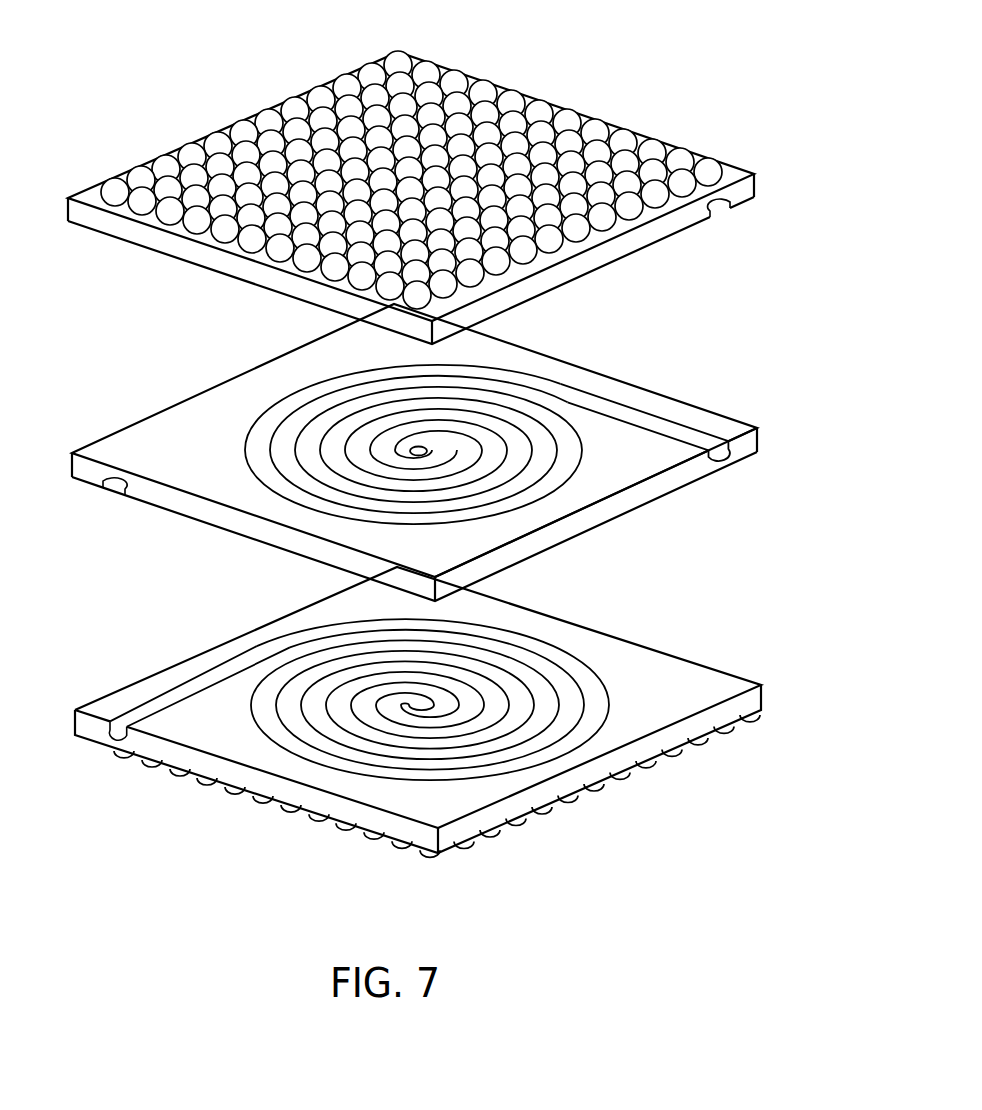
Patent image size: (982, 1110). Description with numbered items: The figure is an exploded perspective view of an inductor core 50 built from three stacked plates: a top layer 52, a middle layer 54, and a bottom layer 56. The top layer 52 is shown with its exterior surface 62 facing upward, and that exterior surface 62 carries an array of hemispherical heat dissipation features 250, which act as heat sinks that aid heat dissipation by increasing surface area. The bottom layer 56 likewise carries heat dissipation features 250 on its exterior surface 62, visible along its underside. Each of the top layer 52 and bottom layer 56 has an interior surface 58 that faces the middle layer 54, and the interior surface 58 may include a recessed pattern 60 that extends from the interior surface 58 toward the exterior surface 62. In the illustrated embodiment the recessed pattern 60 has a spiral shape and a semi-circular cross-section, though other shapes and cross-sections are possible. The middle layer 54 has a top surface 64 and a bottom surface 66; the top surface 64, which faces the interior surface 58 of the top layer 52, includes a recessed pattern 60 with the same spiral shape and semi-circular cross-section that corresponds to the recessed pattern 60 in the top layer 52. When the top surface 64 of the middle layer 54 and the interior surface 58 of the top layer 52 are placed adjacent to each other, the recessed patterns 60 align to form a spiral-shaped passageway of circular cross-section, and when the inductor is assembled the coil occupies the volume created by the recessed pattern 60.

The core 50 is at (150, 86).
The top layer 52 is at (652, 230).
The middle layer 54 is at (663, 483).
The bottom layer 56 is at (690, 730).
The interior surface 58 is at (596, 292).
The recessed pattern 60 is at (240, 437).
The exterior surface 62 is at (730, 175).
The top surface 64 is at (655, 403).
The bottom surface 66 is at (600, 543).
The heat dissipation features 250 is at (503, 97).